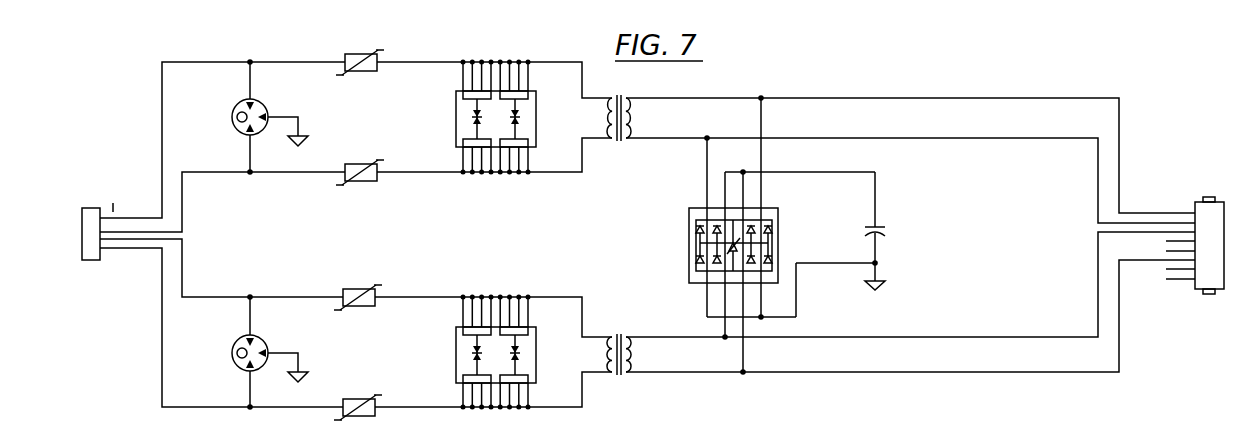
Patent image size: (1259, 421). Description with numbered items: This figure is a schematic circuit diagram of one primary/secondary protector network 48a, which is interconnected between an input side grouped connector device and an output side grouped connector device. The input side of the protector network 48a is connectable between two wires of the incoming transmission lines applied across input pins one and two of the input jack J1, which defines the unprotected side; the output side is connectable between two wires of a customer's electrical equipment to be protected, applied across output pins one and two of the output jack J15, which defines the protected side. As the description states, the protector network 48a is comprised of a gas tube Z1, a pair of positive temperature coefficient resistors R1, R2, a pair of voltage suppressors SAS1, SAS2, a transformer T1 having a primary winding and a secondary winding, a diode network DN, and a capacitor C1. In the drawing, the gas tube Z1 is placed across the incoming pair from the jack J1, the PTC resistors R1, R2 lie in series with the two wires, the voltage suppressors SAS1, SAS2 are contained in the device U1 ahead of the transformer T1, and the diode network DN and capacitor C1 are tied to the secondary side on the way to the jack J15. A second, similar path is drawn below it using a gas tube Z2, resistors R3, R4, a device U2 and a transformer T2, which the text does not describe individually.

The primary/secondary protector network 48a is at (145, 118).
The RJ-45 jack J1 is at (100, 273).
The RJ-45 jack J15 is at (1200, 261).
The positive temperature coefficient (PTC) resistor R1 is at (360, 53).
The positive temperature coefficient (PTC) resistor R2 is at (360, 163).
The varistor / resistor R3 is at (358, 288).
The varistor / resistor R4 is at (358, 398).
The gas tube Z1 is at (270, 117).
The gas discharge tube Z2 is at (270, 352).
The surge protection device U1 is at (512, 117).
The surge protection device U2 is at (512, 352).
The voltage suppressor SAS1 is at (473, 121).
The voltage suppressor SAS2 is at (519, 121).
The transformer T1 is at (618, 108).
The transformer T2 is at (618, 344).
The diode network DN is at (676, 236).
The capacitor C1 is at (889, 231).